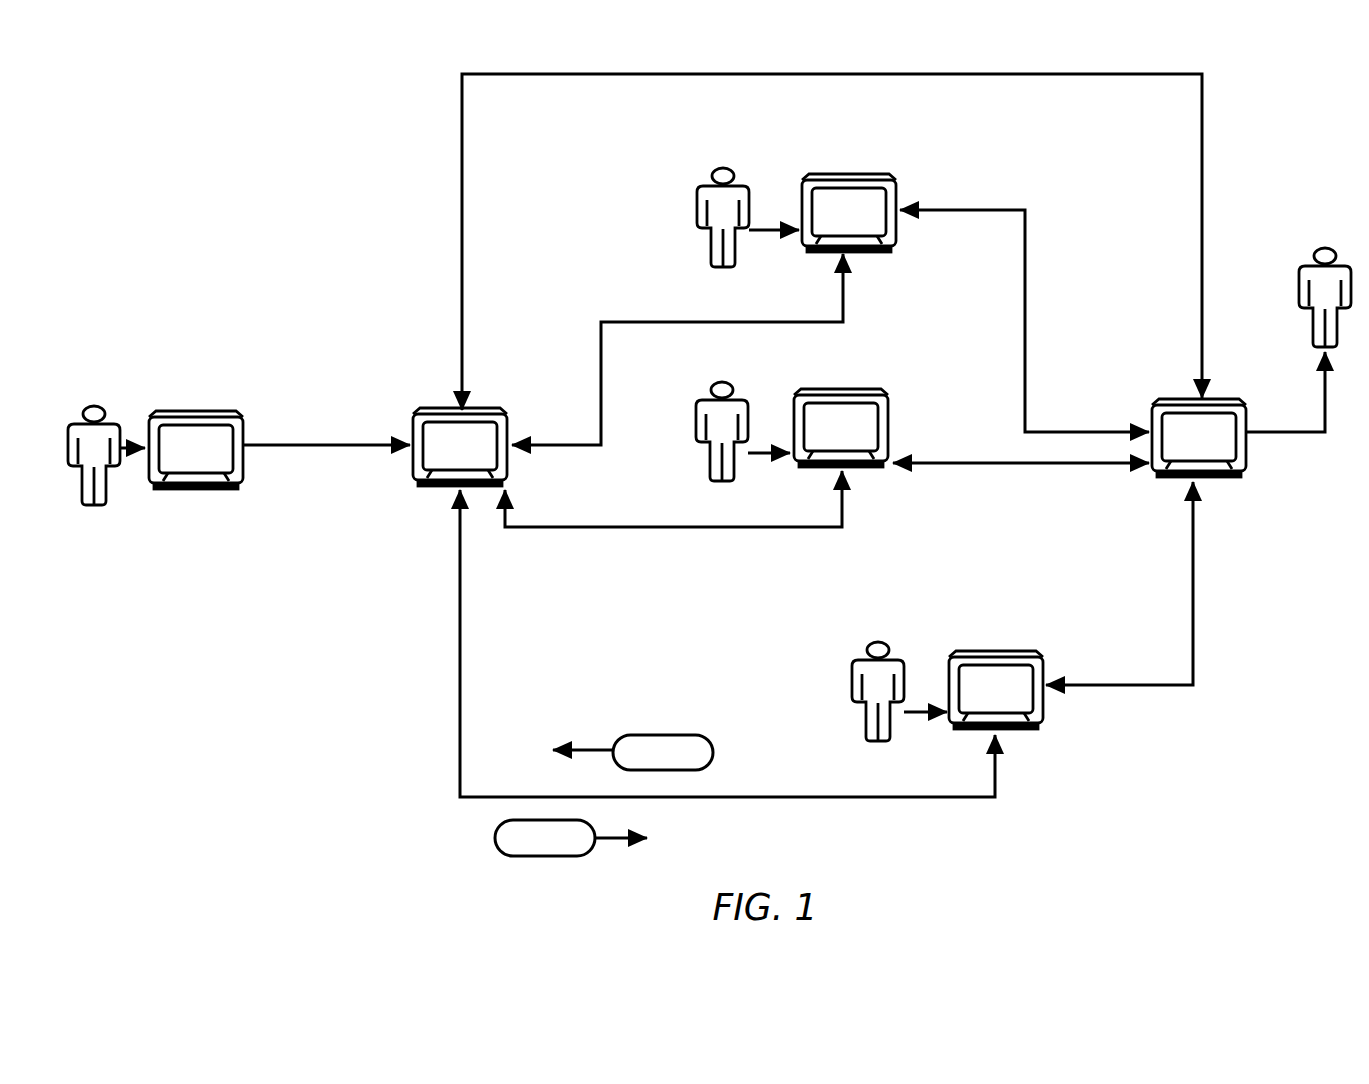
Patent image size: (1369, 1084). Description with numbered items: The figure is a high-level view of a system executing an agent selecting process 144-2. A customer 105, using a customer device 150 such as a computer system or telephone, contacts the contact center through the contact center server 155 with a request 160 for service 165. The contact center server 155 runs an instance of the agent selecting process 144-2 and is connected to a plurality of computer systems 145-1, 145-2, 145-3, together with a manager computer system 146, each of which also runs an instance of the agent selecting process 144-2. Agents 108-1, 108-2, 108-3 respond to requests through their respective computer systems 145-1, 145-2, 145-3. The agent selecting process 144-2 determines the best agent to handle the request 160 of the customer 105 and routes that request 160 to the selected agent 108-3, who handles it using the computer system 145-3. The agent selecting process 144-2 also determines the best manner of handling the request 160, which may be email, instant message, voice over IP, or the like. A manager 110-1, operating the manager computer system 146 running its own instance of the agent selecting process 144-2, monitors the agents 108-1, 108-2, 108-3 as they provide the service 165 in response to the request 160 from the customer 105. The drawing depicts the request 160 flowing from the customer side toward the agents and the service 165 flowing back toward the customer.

The customer 105 is at (93, 405).
The customer device 150 is at (207, 413).
The contact center server 155 is at (422, 412).
The computer system 145-1 is at (820, 178).
The computer system 145-2 is at (870, 392).
The computer system 145-3 is at (1045, 712).
The manager computer system 146 is at (1240, 474).
The agent 108-1 is at (708, 232).
The agent 108-2 is at (707, 453).
The agent 108-3 is at (862, 715).
The manager 110-1 is at (1313, 327).
The agent selecting process 144-2 is at (436, 459).
The service 165 is at (645, 765).
The request 160 is at (527, 850).